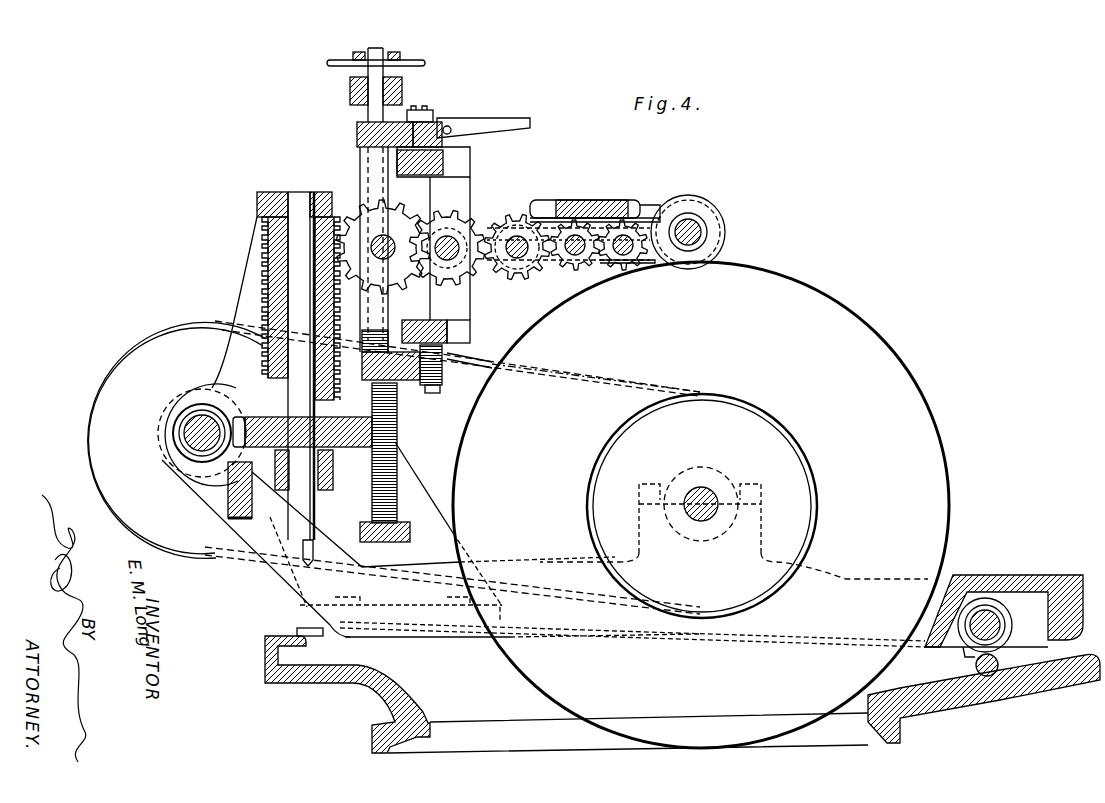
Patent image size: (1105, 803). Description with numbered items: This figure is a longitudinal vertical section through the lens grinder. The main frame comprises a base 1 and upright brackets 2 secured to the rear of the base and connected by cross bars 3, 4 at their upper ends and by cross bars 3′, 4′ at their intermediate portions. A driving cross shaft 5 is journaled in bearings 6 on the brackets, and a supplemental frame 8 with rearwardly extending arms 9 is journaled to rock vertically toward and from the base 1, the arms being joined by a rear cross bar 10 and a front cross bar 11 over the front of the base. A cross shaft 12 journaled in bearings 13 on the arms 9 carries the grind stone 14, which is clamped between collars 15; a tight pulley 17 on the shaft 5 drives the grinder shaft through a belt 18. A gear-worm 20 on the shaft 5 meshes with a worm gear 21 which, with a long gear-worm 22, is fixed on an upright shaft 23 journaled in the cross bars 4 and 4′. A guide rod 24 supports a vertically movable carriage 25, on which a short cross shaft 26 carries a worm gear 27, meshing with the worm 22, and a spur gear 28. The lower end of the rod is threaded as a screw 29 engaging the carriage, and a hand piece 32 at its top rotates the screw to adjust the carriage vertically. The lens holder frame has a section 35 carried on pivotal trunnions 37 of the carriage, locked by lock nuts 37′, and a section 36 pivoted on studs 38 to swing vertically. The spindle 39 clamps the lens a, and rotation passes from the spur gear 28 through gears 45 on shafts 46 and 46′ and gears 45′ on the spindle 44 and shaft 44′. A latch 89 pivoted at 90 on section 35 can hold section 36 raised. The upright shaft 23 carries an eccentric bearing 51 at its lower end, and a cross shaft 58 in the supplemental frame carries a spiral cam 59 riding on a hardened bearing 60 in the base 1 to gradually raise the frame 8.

The base 1 is at (380, 720).
The upright brackets 2 is at (250, 278).
The cross bar 3 is at (355, 90).
The cross bar 3′ is at (410, 532).
The cross bar 4 is at (257, 201).
The cross bar 4′ is at (336, 475).
The cross shaft 5 is at (198, 425).
The bearings 6 is at (160, 415).
The supplemental frame 8 is at (940, 592).
The arms 9 is at (268, 585).
The cross bar 10 is at (228, 505).
The cross bar 11 is at (1035, 575).
The cross shaft 12 is at (703, 518).
The bearings 13 is at (735, 478).
The grind stone 14 is at (885, 352).
The collars 15 is at (594, 496).
The tight pulley 17 is at (100, 437).
The belt 18 is at (485, 362).
The gear-worm 20 is at (178, 437).
The worm gear 21 is at (262, 418).
The gear-worm 22 is at (268, 356).
The upright shaft 23 is at (300, 192).
The guide rod 24 is at (403, 88).
The carriage 25 is at (372, 160).
The cross shaft 26 is at (378, 238).
The worm gear 27 is at (420, 216).
The spur gear 28 is at (436, 260).
The screw 29 is at (397, 407).
The hand piece 32 is at (385, 60).
The frame section 35 is at (470, 167).
The frame section 36 is at (598, 215).
The pivotal trunnions 37 is at (455, 128).
The lock nuts 37′ is at (432, 114).
The studs 38 is at (512, 262).
The spindle 39 is at (700, 222).
The spindle 44 is at (628, 240).
The shaft 44′ is at (576, 204).
The gears 45 is at (498, 225).
The gears 45′ is at (615, 262).
The shaft 46 is at (517, 236).
The shaft 46′ is at (462, 226).
The eccentric bearing 51 is at (308, 566).
The cross shaft 58 is at (996, 622).
The spiral cam 59 is at (966, 644).
The hardened bearing 60 is at (999, 665).
The latch 89 is at (530, 123).
The pivot 90 is at (449, 128).
The lens a is at (690, 208).